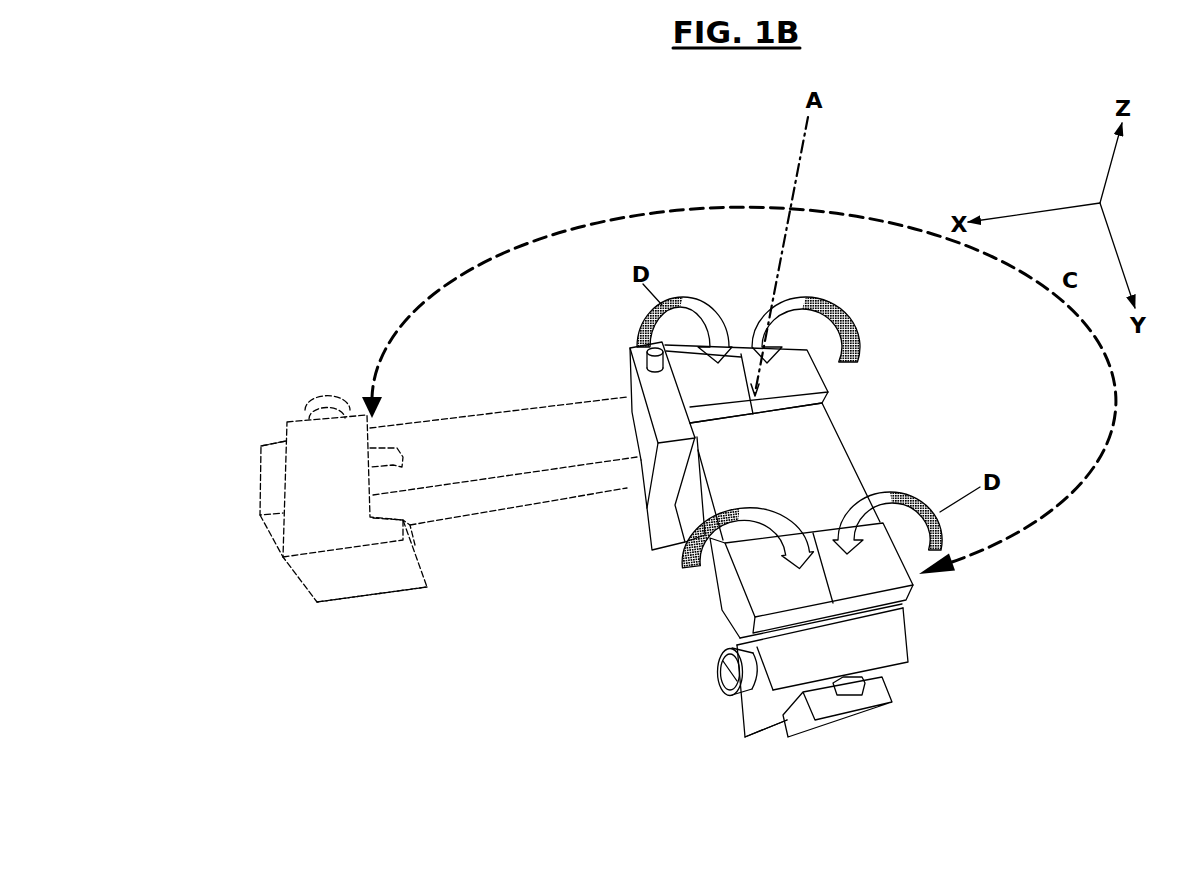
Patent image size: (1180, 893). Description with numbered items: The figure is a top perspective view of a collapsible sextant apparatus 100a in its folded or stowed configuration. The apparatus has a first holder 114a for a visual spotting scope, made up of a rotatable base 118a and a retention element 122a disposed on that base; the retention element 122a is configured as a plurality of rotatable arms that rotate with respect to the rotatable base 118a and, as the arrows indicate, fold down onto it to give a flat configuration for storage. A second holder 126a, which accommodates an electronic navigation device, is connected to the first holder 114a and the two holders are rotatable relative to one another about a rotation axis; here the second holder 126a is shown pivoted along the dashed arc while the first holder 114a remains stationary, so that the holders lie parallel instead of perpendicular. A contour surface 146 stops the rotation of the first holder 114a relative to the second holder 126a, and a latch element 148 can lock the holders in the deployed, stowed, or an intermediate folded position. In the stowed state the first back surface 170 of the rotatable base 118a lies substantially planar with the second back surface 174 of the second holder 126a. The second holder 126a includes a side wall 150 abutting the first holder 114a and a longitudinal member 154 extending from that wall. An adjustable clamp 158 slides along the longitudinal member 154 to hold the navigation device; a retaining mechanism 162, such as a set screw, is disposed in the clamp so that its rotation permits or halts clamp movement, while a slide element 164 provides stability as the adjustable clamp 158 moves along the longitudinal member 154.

The collapsible sextant apparatus 100a is at (460, 235).
The first holder 114a is at (938, 438).
The rotatable base 118a is at (770, 493).
The retention element 122a is at (807, 381).
The second holder 126a is at (453, 604).
The contour surface 146 is at (639, 470).
The latch element 148 is at (641, 357).
The side wall 150 is at (632, 390).
The longitudinal member 154 is at (538, 459).
The adjustable clamp 158 is at (317, 433).
The retaining mechanism 162 is at (320, 392).
The slide element 164 is at (280, 470).
The first back surface 170 is at (531, 505).
The second back surface 174 is at (720, 612).